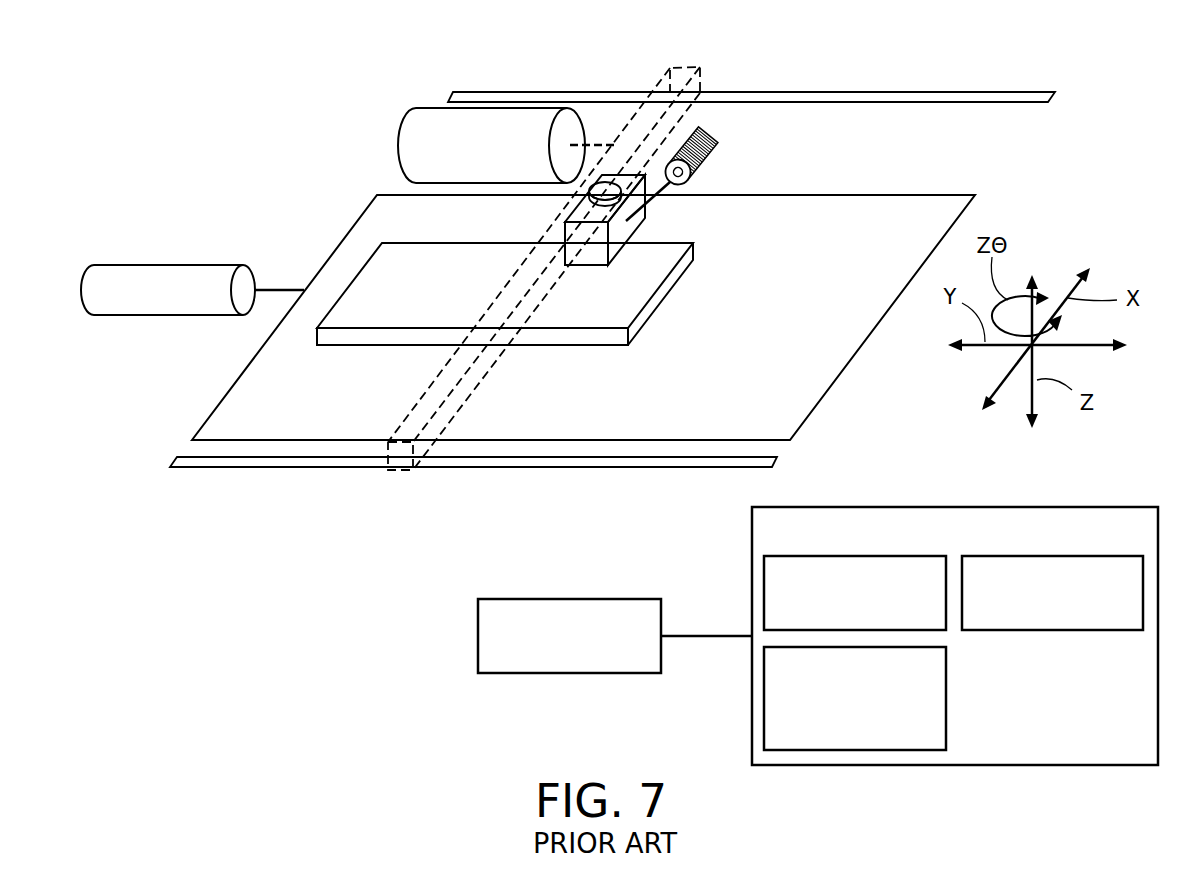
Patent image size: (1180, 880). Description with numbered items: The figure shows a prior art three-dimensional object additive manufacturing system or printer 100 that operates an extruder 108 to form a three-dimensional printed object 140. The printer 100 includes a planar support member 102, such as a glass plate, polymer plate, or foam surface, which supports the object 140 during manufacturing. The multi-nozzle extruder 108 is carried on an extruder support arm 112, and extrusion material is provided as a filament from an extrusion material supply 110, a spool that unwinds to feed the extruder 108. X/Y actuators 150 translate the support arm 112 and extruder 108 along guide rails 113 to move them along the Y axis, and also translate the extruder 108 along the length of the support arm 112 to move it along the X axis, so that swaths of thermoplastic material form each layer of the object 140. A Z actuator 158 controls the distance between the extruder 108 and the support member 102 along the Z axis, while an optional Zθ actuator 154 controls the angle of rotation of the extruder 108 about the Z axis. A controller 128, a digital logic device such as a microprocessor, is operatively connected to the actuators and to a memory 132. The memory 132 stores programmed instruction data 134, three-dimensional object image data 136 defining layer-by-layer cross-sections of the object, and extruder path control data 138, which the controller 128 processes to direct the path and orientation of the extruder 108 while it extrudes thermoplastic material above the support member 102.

The three-dimensional object additive manufacturing system or printer 100 is at (268, 70).
The support member 102 is at (837, 382).
The extruder 108 is at (634, 220).
The extrusion material supply 110 is at (717, 134).
The extruder support arm 112 is at (670, 65).
The guide rails 113 is at (808, 92).
The controller 128 is at (478, 634).
The memory 132 is at (940, 507).
The programmed instruction data 134 is at (764, 587).
The 3D object image data 136 is at (1052, 631).
The extruder path control data 138 is at (947, 697).
The three-dimensional printed object 140 is at (593, 345).
The X/Y actuators 150 is at (398, 147).
The Zθ actuator 154 is at (592, 192).
The Z actuator 158 is at (169, 262).